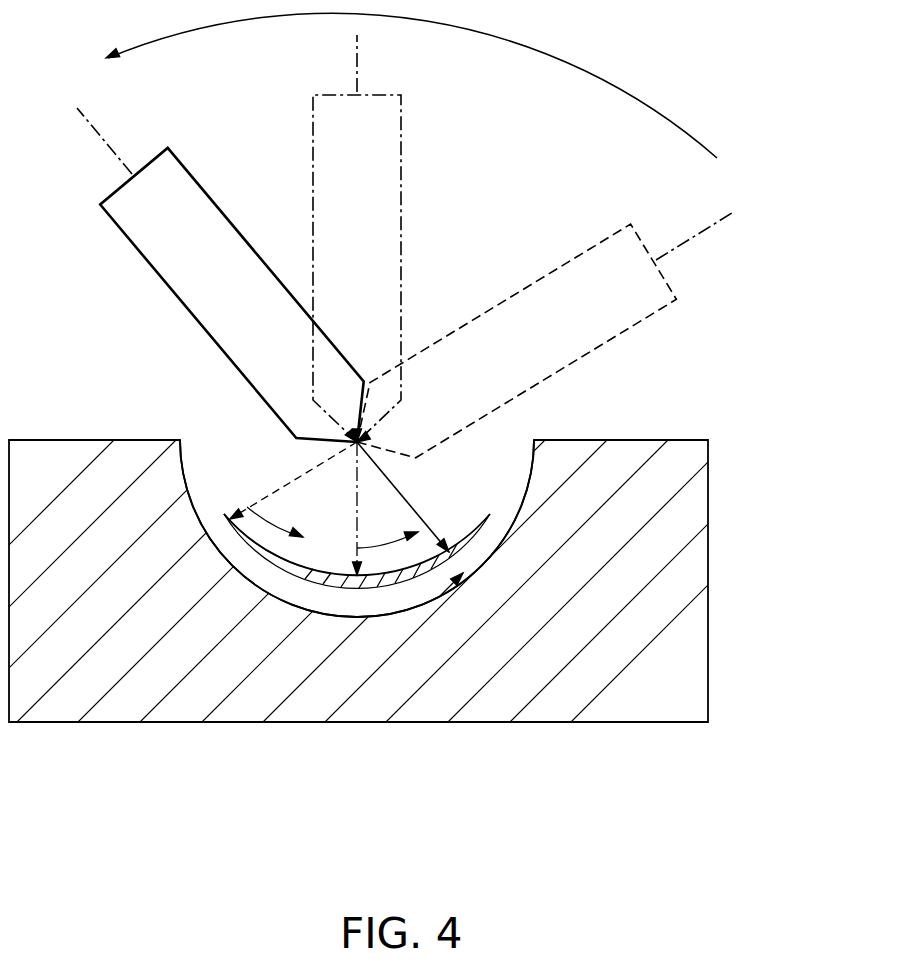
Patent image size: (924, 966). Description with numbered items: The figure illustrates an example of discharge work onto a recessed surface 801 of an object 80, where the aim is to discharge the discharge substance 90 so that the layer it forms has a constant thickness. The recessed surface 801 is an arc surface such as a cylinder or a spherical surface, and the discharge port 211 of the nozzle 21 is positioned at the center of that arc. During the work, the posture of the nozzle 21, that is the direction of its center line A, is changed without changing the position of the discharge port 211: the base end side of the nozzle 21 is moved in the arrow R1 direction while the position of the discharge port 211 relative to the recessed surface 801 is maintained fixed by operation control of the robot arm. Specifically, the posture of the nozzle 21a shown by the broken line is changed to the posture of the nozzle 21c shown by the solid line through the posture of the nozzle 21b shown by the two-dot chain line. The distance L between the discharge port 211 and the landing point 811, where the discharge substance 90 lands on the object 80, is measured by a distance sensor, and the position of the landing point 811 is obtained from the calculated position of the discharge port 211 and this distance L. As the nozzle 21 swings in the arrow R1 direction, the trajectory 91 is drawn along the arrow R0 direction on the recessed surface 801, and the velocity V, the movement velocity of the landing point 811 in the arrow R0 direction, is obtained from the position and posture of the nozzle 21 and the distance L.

The nozzle 21 is at (388, 276).
The nozzle 21a is at (608, 236).
The nozzle 21b is at (403, 143).
The nozzle 21c is at (192, 170).
The discharge port 211 is at (357, 442).
The object 80 is at (709, 545).
The recessed surface 801 is at (208, 480).
The landing point 811 is at (250, 546).
The discharge substance 90 is at (240, 481).
The trajectory 91 is at (230, 512).
The arrow R0 direction R0 is at (400, 602).
The arrow R1 direction R1 is at (394, 85).
The center line A is at (97, 128).
The distance L is at (339, 508).
The velocity V is at (332, 540).